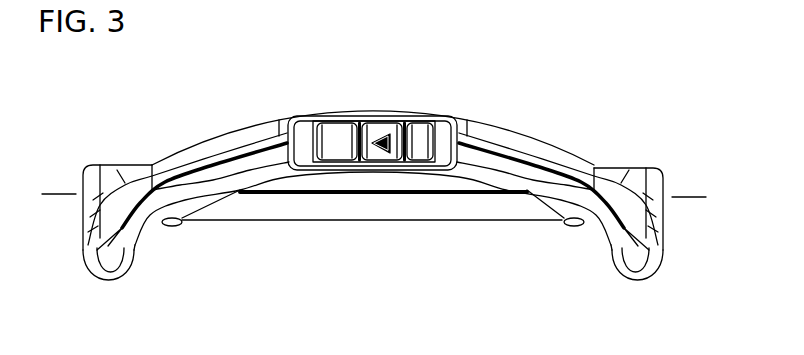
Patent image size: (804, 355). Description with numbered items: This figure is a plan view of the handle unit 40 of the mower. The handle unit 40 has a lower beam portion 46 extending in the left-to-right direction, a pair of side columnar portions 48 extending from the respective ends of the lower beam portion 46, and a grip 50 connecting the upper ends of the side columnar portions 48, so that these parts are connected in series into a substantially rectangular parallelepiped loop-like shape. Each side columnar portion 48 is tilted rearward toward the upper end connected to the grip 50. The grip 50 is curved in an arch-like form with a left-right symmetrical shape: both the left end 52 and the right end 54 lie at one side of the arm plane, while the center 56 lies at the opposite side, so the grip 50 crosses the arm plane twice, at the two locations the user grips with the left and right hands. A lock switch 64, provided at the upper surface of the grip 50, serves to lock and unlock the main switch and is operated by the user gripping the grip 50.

The handle unit 40 is at (641, 70).
The lower beam portion 46 is at (375, 222).
The side columnar portions 48 is at (82, 215).
The grip 50 is at (197, 146).
The left end 52 is at (110, 280).
The right end 54 is at (637, 282).
The center 56 is at (373, 115).
The lock switch 64 is at (422, 130).